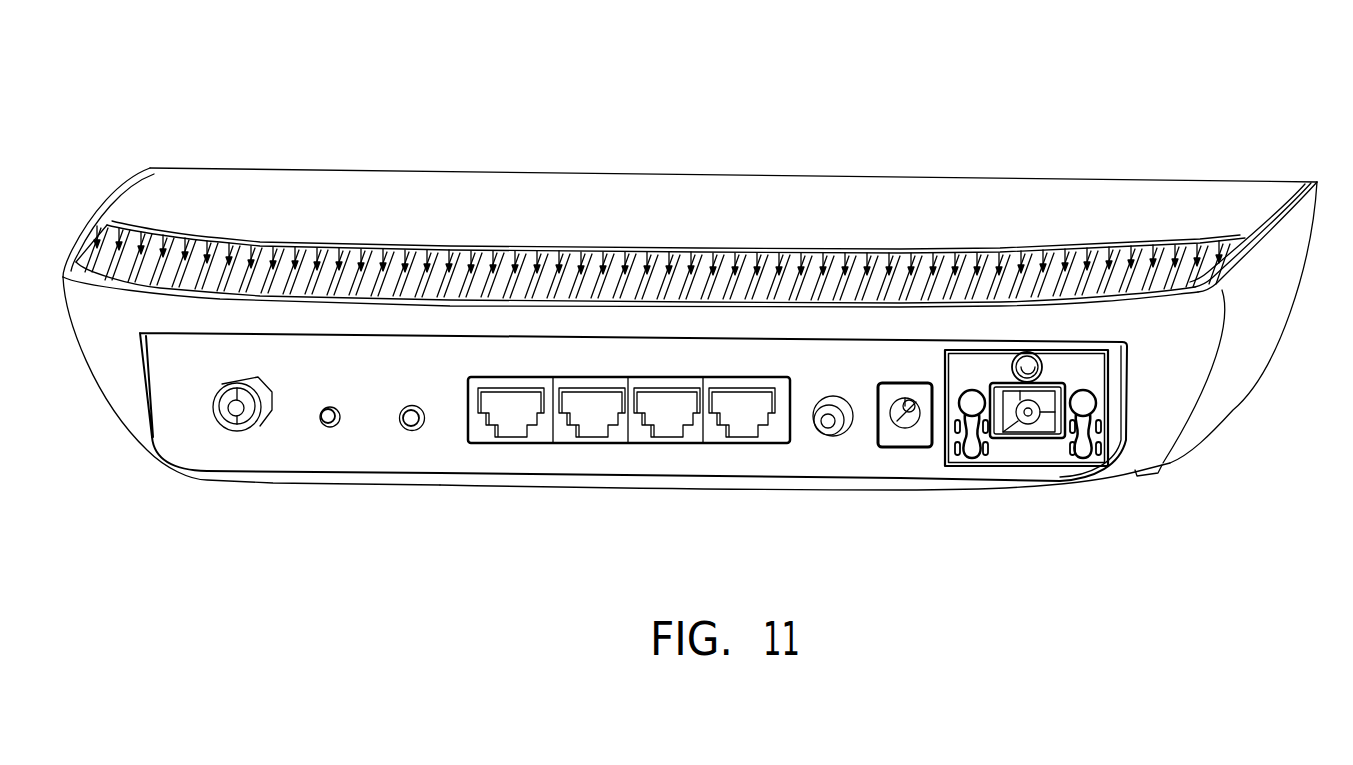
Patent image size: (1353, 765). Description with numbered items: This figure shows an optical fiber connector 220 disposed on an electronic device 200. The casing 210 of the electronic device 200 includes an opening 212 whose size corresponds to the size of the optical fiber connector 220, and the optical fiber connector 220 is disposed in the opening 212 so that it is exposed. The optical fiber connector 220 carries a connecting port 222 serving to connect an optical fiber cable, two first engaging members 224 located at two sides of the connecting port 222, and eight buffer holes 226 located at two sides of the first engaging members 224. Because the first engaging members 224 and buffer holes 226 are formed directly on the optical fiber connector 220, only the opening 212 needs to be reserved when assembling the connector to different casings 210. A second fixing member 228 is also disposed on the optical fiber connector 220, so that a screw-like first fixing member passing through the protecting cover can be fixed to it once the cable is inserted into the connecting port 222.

The electronic device 200 is at (296, 123).
The casing 210 is at (1170, 362).
The opening 212 is at (1077, 332).
The optical fiber connector 220 is at (1070, 463).
The connecting port 222 is at (1028, 420).
The first engaging member 224 is at (1100, 440).
The buffer hole 226 is at (1099, 425).
The second fixing member 228 is at (1025, 352).